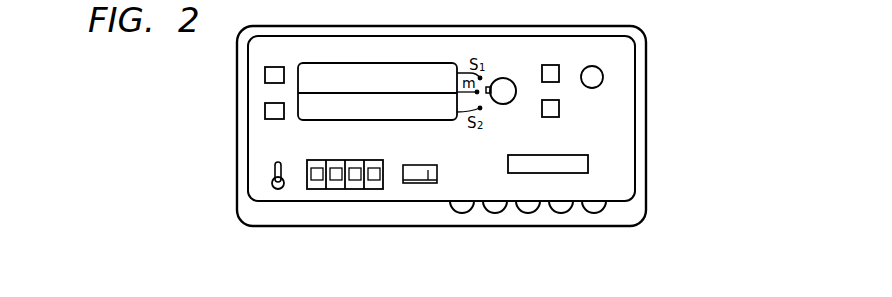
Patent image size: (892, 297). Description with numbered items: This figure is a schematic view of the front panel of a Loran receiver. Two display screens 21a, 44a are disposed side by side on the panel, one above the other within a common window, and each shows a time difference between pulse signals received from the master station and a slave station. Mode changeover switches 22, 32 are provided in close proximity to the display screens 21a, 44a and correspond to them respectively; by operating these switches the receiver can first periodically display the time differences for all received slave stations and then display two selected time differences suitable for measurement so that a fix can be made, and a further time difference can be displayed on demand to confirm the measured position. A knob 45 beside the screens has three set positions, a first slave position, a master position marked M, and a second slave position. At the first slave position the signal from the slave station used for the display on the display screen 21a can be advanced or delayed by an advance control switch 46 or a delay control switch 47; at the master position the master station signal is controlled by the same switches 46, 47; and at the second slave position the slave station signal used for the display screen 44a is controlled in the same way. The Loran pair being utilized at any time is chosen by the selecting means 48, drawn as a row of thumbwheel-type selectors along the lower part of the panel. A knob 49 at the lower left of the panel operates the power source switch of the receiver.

The display screen 21a is at (390, 70).
The mode changeover switch 22 is at (265, 72).
The mode changeover switch 32 is at (266, 114).
The display screen 44a is at (424, 116).
The knob 45 is at (507, 101).
The advance control switch 46 is at (552, 65).
The delay control switch 47 is at (553, 117).
The selecting means 48 is at (337, 189).
The knob 49 is at (271, 183).